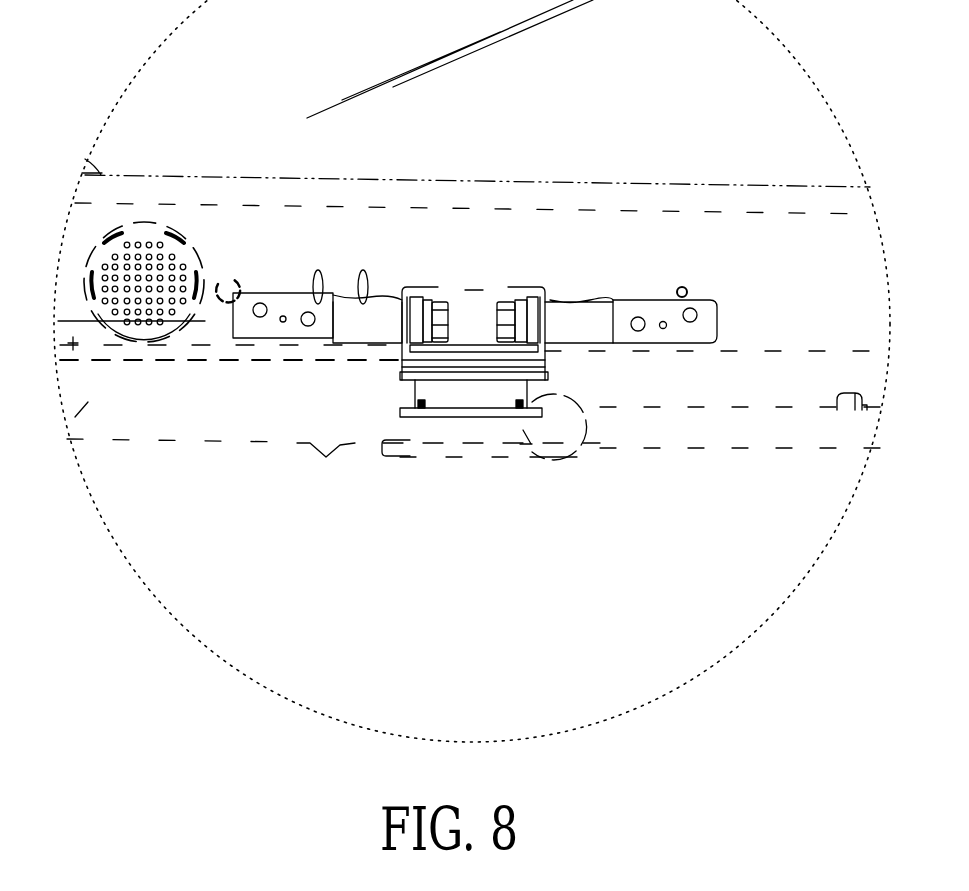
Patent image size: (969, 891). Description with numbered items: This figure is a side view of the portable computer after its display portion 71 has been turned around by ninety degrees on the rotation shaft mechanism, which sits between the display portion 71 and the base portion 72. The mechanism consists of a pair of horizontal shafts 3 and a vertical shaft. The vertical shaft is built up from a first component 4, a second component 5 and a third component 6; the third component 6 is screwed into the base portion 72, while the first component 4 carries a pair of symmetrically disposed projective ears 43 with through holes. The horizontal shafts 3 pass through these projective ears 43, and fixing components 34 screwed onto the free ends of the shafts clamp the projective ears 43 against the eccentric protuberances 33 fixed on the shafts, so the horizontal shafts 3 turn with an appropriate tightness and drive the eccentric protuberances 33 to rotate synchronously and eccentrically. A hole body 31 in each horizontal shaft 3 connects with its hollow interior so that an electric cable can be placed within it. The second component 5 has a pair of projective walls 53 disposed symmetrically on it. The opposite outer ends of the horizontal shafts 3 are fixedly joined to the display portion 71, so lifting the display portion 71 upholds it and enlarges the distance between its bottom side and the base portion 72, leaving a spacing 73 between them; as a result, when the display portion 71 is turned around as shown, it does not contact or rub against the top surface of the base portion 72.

The horizontal shaft 3 is at (690, 313).
The hole body 31 is at (356, 338).
The eccentric protuberance 33 is at (548, 345).
The fixing component 34 is at (508, 310).
The projective ear 43 is at (527, 310).
The first component 4 is at (526, 232).
The second component 5 is at (478, 451).
The projective wall 53 is at (545, 365).
The third component 6 is at (400, 411).
The display portion 71 is at (73, 144).
The base portion 72 is at (83, 438).
The spacing 73 is at (48, 268).